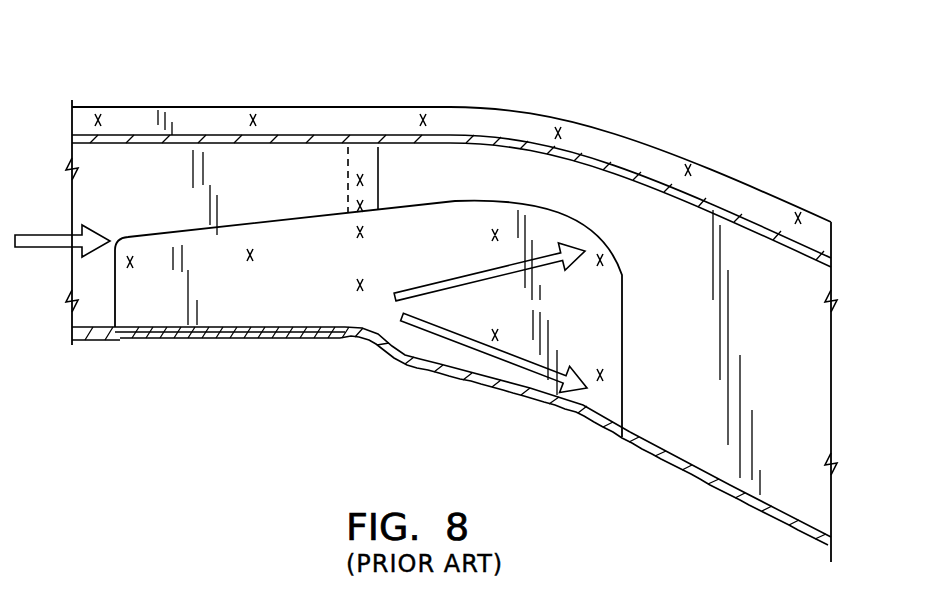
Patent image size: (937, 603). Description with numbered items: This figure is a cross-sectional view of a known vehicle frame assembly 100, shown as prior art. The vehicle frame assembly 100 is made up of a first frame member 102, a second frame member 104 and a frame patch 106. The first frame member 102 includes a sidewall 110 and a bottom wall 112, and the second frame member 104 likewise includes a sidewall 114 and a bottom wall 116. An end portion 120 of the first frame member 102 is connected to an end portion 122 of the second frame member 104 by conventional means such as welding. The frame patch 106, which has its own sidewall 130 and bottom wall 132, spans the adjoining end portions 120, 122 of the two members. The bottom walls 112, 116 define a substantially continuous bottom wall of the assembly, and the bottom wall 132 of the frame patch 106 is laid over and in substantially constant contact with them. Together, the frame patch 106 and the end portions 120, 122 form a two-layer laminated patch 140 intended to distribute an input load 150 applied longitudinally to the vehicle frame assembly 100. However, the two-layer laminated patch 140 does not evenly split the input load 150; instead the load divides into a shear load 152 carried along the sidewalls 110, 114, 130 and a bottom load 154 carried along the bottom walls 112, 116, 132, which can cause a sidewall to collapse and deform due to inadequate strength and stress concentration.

The vehicle frame assembly 100 is at (257, 395).
The first frame member 102 is at (770, 258).
The second frame member 104 is at (115, 162).
The frame patch 106 is at (300, 226).
The sidewall 110 is at (465, 168).
The bottom wall 112 is at (638, 446).
The sidewall 114 is at (220, 165).
The bottom wall 116 is at (190, 342).
The end portion 120 is at (390, 168).
The end portion 122 is at (340, 162).
The sidewall 130 is at (463, 224).
The bottom wall 132 is at (472, 372).
The two-layer laminated patch 140 is at (370, 368).
The input load 150 is at (42, 252).
The shear load 152 is at (445, 288).
The bottom load 154 is at (530, 372).